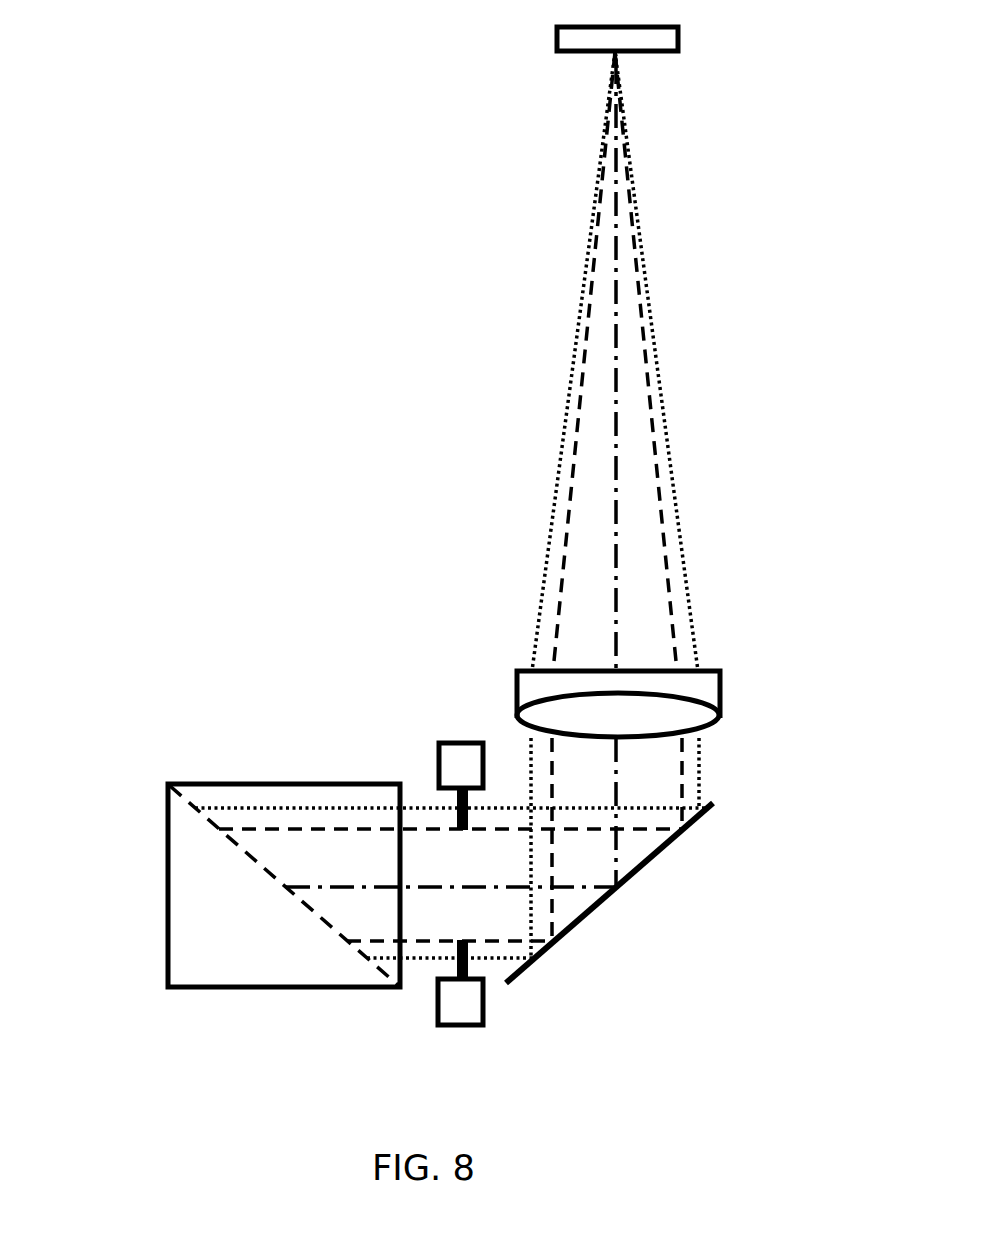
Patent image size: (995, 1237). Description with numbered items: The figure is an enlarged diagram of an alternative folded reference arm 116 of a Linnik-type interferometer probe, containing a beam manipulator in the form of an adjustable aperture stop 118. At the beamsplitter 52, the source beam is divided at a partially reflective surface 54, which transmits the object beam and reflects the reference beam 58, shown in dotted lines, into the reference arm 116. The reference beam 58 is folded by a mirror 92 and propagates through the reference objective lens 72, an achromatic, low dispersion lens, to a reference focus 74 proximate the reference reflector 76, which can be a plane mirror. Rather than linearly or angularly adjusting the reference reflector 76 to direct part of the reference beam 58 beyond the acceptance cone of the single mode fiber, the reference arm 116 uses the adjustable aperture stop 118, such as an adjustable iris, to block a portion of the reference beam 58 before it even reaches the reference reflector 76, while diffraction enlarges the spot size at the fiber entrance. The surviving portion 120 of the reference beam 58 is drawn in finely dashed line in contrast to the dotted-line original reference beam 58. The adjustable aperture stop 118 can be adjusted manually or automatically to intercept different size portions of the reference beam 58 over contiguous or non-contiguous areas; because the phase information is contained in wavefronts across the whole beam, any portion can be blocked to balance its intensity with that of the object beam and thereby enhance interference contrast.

The reference arm 116 is at (418, 314).
The reference reflector 76 is at (557, 40).
The reference focus 74 is at (617, 54).
The reference beam 58 is at (678, 447).
The surviving portion of the reference beam 120 is at (557, 477).
The reference objective lens 72 is at (722, 690).
The beamsplitter 52 is at (170, 917).
The partially reflective surface 54 is at (258, 857).
The mirror 92 is at (657, 856).
The adjustable aperture stop 118 is at (484, 1012).